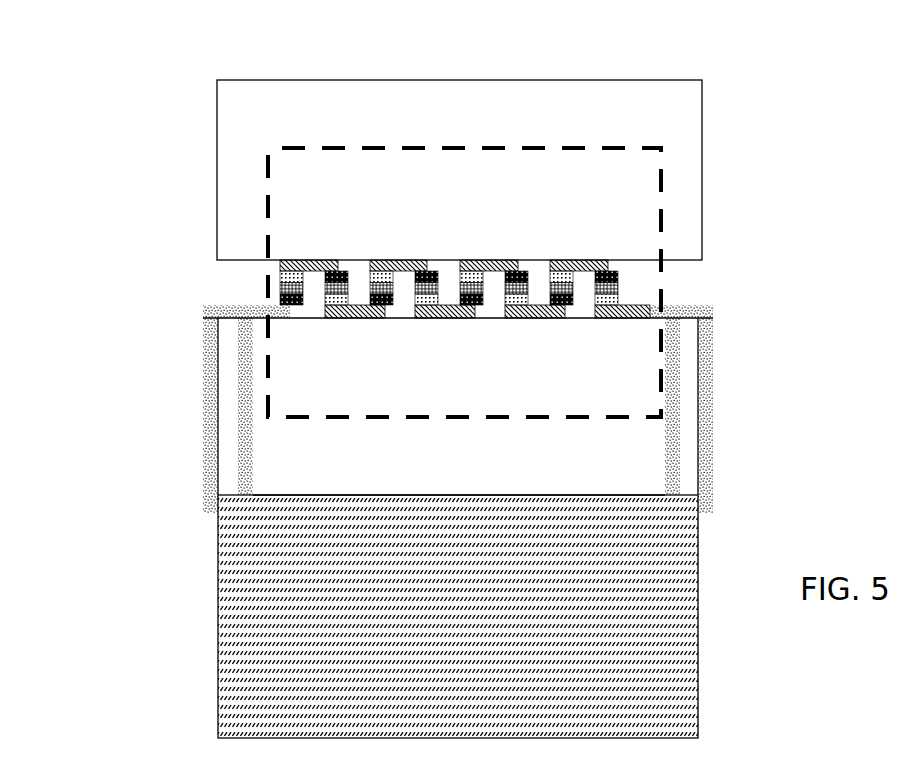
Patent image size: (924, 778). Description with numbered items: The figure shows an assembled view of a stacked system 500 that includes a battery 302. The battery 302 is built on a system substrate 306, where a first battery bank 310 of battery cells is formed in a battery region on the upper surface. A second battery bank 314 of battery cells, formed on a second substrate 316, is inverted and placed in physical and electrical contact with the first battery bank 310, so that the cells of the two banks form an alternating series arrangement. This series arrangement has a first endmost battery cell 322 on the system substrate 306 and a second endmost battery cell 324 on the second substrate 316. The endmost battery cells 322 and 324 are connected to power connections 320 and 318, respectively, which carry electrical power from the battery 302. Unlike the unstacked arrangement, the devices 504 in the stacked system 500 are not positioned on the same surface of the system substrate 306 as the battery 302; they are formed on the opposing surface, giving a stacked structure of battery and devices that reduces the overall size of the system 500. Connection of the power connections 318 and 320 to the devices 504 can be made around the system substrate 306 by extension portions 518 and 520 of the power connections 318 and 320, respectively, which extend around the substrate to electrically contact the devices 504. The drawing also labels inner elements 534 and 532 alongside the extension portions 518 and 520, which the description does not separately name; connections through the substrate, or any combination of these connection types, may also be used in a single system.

The battery 302 is at (247, 163).
The second substrate 316 is at (464, 267).
The second battery bank 314 is at (608, 250).
The second endmost battery cell 324 is at (297, 250).
The power connection 318 is at (233, 283).
The power connection 320 is at (683, 292).
The first battery bank 310 is at (653, 323).
The first endmost battery cell 322 is at (617, 320).
The system substrate 306 is at (459, 471).
The extension portion 518 is at (199, 373).
The extension portion 520 is at (720, 360).
The left inner pillar 534 is at (237, 448).
The right inner pillar 532 is at (683, 455).
The devices 504 is at (202, 632).
The stacked system 500 is at (873, 670).